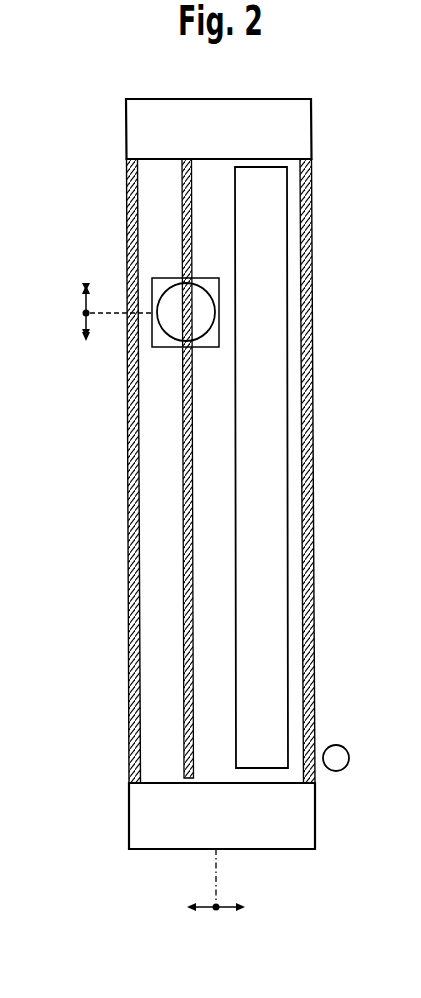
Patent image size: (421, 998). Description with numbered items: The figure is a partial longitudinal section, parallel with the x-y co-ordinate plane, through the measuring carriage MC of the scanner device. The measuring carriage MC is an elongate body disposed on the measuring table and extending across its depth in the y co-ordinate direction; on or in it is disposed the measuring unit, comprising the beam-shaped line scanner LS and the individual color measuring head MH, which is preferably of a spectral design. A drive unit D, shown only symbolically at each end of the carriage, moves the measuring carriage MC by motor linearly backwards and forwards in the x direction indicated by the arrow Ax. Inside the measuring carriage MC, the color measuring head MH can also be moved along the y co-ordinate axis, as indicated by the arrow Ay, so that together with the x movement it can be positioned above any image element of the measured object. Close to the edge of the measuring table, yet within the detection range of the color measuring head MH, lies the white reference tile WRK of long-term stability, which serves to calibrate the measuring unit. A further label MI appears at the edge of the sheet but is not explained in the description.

The drive unit D is at (142, 131).
The measuring carriage MC is at (128, 552).
The line scanner LS is at (267, 501).
The color measuring head MH is at (167, 293).
The arrow Ay is at (82, 323).
The arrow Ax is at (221, 910).
The white reference tile WRK is at (336, 757).
The partially visible label MI is at (409, 939).